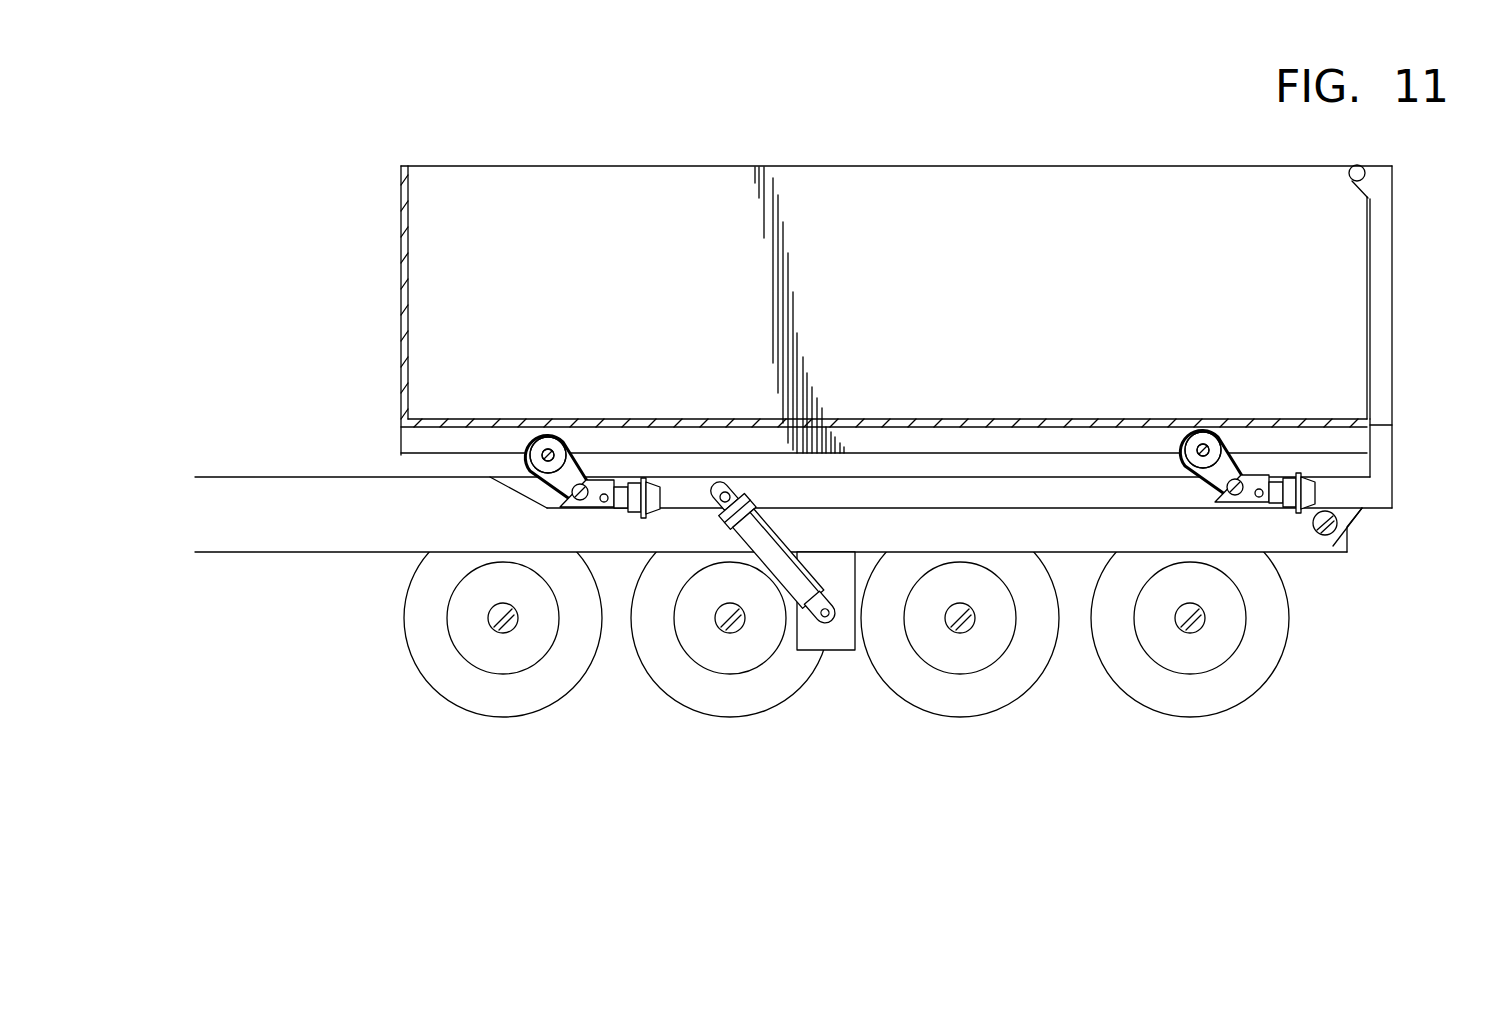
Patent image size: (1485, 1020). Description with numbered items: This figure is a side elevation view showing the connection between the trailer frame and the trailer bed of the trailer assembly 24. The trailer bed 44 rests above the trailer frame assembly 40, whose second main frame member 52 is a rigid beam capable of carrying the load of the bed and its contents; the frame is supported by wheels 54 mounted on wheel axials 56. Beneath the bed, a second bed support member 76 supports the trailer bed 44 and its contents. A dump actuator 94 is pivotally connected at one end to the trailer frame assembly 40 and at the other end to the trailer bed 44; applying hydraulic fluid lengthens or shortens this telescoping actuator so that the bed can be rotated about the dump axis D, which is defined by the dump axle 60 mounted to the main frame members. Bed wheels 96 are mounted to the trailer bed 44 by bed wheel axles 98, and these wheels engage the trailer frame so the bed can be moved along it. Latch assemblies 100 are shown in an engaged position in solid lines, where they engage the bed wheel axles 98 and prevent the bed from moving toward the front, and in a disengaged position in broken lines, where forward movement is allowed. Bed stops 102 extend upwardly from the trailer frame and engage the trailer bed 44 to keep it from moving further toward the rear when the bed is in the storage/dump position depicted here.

The trailer assembly 24 is at (1001, 132).
The trailer bed 44 is at (397, 219).
The second main frame member 52 is at (345, 535).
The wheels 54 is at (685, 688).
The wheel axials 56 is at (1180, 625).
The trailer frame assembly 40 is at (838, 651).
The dump actuator 94 is at (798, 538).
The bed wheels 96 is at (565, 453).
The bed wheel axles 98 is at (552, 448).
The latch assemblies 100 is at (512, 446).
The second bed support member 76 is at (975, 490).
The bed stops 102 is at (1385, 445).
The dump axle 60 is at (1338, 520).
The dump axis D is at (1334, 540).